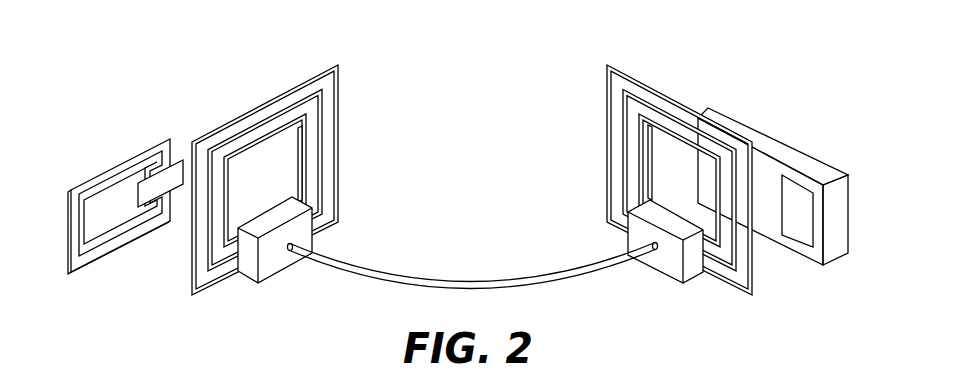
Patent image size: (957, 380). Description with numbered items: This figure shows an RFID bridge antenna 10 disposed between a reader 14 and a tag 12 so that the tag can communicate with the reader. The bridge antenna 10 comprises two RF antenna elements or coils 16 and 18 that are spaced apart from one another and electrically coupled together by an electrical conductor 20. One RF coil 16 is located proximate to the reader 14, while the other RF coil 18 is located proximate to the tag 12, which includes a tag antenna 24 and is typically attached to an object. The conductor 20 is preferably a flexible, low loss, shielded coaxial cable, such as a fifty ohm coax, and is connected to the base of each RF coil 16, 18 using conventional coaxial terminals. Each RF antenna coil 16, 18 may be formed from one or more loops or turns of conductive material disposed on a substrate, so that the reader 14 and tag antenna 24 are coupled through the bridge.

The RFID bridge antenna 10 is at (493, 53).
The tag 12 is at (168, 182).
The reader 14 is at (790, 146).
The RF coil 16 is at (657, 180).
The RF coil 18 is at (286, 180).
The electrical conductor 20 is at (447, 279).
The tag antenna 24 is at (97, 176).